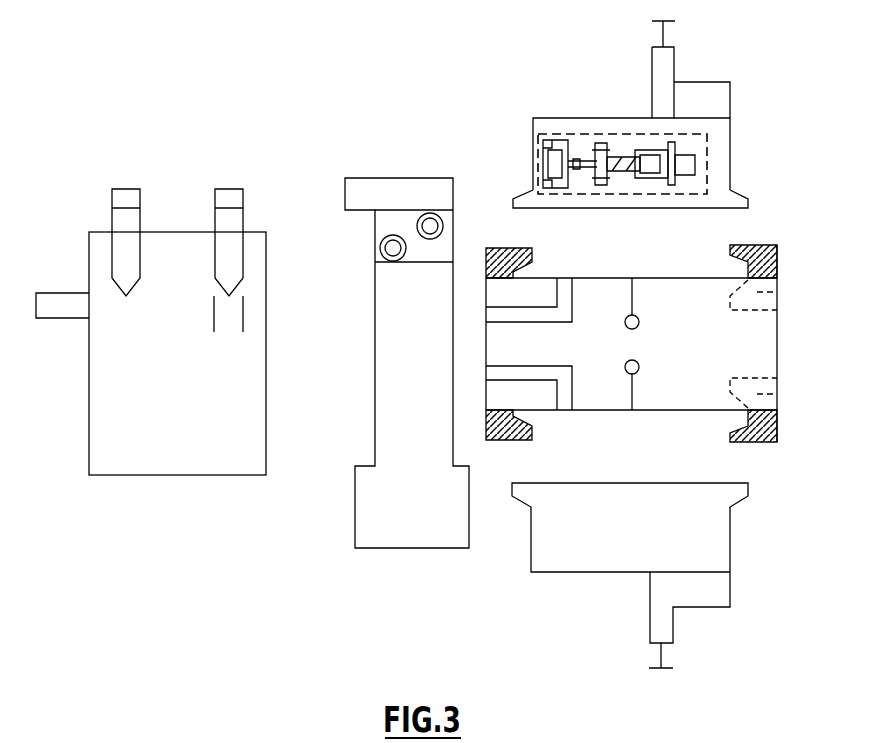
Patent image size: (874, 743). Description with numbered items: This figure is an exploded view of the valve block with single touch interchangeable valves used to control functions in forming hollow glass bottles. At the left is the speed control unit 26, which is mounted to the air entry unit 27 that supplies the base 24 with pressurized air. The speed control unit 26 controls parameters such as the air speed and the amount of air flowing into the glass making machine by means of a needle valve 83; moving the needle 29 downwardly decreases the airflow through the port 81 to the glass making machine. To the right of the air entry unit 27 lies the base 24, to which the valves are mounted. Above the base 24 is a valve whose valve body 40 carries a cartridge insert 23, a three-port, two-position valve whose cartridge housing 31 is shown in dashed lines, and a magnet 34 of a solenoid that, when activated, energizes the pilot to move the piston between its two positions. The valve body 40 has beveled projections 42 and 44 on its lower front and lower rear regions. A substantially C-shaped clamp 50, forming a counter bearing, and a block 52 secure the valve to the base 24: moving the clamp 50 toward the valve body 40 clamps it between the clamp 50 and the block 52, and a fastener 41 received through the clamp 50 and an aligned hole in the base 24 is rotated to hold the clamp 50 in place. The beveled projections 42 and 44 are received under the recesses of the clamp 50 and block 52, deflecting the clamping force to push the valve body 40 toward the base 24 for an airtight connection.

The cartridge insert 23 is at (601, 139).
The base 24 is at (663, 292).
The speed control unit 26 is at (180, 253).
The air entry unit 27 is at (402, 188).
The needle 29 is at (227, 197).
The cartridge housing 31 is at (531, 136).
The magnet 34 is at (705, 107).
The valve body 40 is at (667, 130).
The fastener 41 is at (770, 285).
The beveled projection 42 is at (725, 195).
The beveled projection 44 is at (532, 197).
The clamp 50 is at (767, 270).
The block 52 is at (515, 255).
The port 81 is at (57, 310).
The needle valve 83 is at (247, 307).